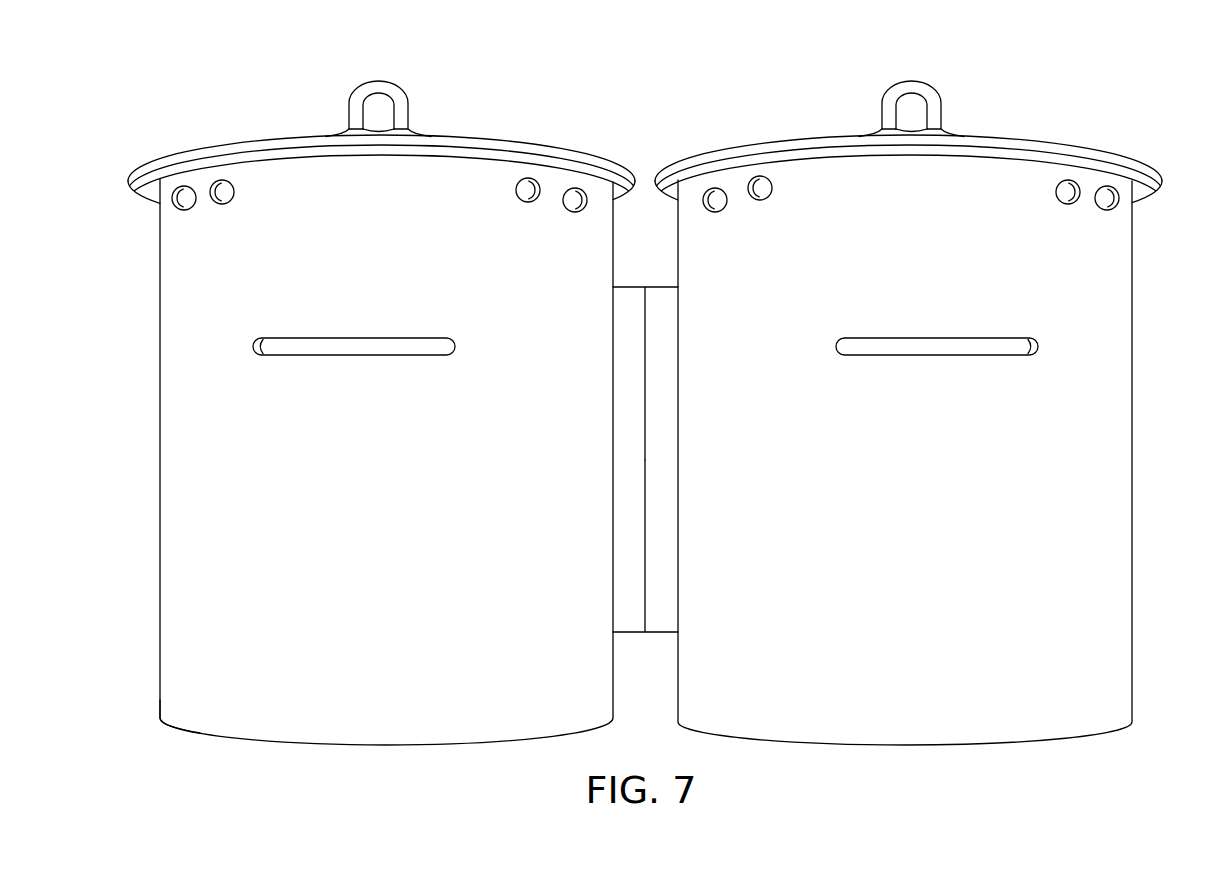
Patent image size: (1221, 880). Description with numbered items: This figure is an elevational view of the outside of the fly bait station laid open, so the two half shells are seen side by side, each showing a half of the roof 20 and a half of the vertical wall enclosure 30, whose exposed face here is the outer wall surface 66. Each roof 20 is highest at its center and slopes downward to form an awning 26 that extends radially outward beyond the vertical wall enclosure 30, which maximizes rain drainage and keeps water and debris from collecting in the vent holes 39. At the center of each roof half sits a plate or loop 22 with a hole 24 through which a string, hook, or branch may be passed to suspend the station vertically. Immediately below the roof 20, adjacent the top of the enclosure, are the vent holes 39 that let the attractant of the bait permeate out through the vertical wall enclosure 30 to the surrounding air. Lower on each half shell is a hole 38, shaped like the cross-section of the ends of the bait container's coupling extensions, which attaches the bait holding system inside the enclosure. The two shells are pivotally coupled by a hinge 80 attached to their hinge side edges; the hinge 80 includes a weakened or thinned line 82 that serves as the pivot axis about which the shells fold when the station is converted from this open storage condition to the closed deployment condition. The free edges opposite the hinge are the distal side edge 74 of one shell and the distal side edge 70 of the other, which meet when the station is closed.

The roof 20 is at (268, 141).
The loop 22 is at (392, 81).
The hole 24 is at (375, 105).
The awning 26 is at (143, 196).
The vertical wall enclosure 30 is at (160, 472).
The holes 38 is at (301, 353).
The vent holes 39 is at (188, 206).
The outer wall surface 66 is at (340, 648).
The distal side edge 70 is at (1132, 644).
The distal side edge 74 is at (160, 707).
The hinge 80 is at (660, 620).
The weakened line 82 is at (646, 310).